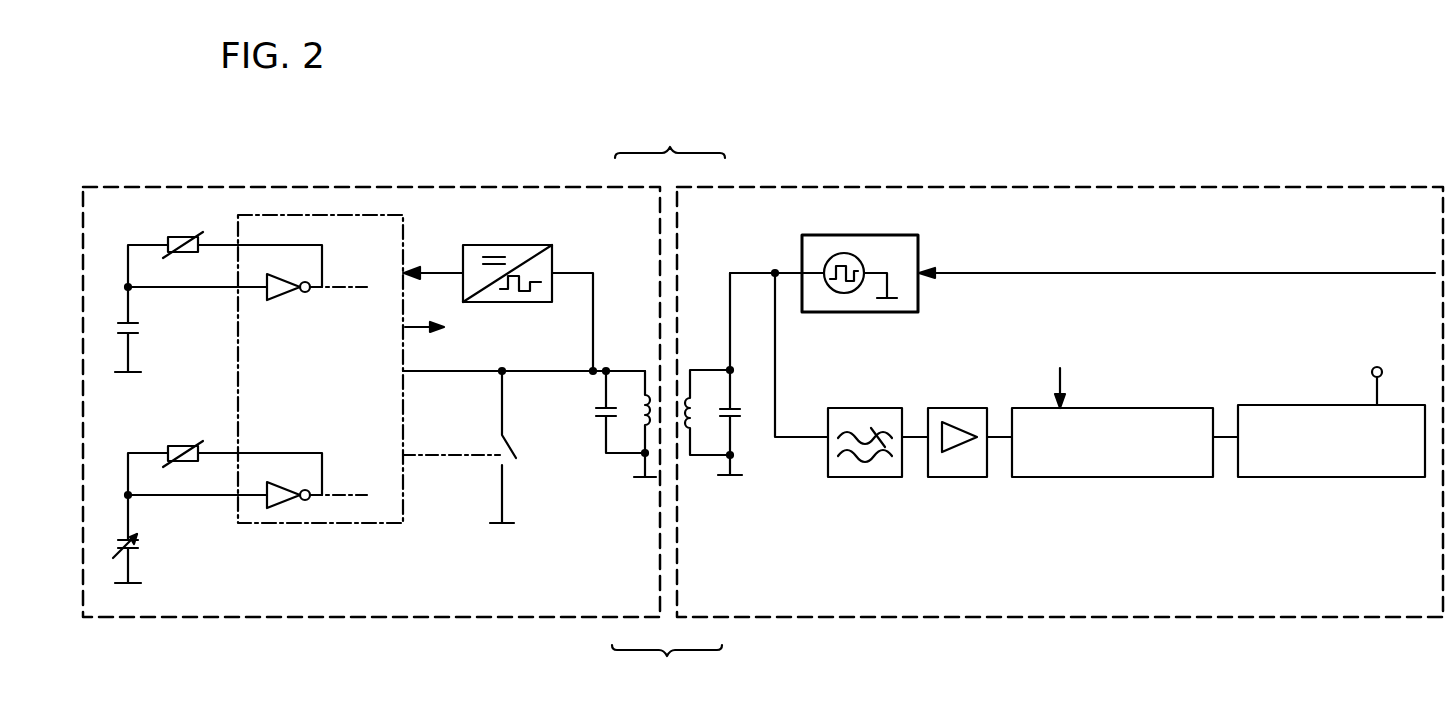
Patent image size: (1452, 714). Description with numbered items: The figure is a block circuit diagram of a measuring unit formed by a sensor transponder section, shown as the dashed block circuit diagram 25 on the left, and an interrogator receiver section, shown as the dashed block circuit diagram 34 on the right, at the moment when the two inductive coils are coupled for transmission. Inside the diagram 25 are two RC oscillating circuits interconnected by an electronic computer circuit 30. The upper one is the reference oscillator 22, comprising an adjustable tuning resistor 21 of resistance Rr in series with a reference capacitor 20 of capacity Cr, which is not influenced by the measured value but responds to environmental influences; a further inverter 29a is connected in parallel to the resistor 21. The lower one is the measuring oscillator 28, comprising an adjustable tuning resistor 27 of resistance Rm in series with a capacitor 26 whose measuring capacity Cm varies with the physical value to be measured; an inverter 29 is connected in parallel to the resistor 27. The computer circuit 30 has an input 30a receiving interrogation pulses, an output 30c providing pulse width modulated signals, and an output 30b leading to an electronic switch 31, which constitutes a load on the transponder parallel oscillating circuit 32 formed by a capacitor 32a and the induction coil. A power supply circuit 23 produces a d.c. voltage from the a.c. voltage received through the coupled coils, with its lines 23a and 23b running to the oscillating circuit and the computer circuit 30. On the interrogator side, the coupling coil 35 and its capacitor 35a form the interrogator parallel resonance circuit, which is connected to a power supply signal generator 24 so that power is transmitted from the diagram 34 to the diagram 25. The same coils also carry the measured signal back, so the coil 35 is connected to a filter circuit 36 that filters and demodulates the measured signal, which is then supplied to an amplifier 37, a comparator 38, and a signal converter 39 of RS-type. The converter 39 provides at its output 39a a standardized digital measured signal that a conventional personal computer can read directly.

The reference capacitor 20 is at (120, 318).
The adjustable tuning resistor 21 is at (178, 237).
The reference oscillator 22 is at (220, 265).
The power supply circuit 23 is at (490, 245).
The converter output line 23a is at (596, 322).
The converter control line 23b is at (420, 272).
The power supply signal generator 24 is at (845, 235).
The block circuit diagram of sensor transponder section 25 is at (158, 620).
The capacitor 26 is at (118, 555).
The adjustable tuning resistor 27 is at (187, 461).
The measuring oscillator 28 is at (228, 490).
The inverter 29 is at (277, 500).
The further inverter 29a is at (281, 294).
The electronic computer circuit 30 is at (373, 525).
The input 30a is at (500, 368).
The output 30b is at (423, 455).
The output 30c is at (413, 333).
The electronic switch 31 is at (500, 464).
The induction coil 32 is at (640, 410).
The capacitor 32a is at (601, 417).
The block circuit diagram of interrogator receiver section 34 is at (708, 620).
The coupling coil 35 is at (688, 403).
The capacitor 35a is at (735, 418).
The filter circuit 36 is at (862, 478).
The amplifier 37 is at (952, 478).
The comparator 38 is at (1090, 478).
The signal converter 39 is at (1318, 478).
The output 39a is at (1371, 372).